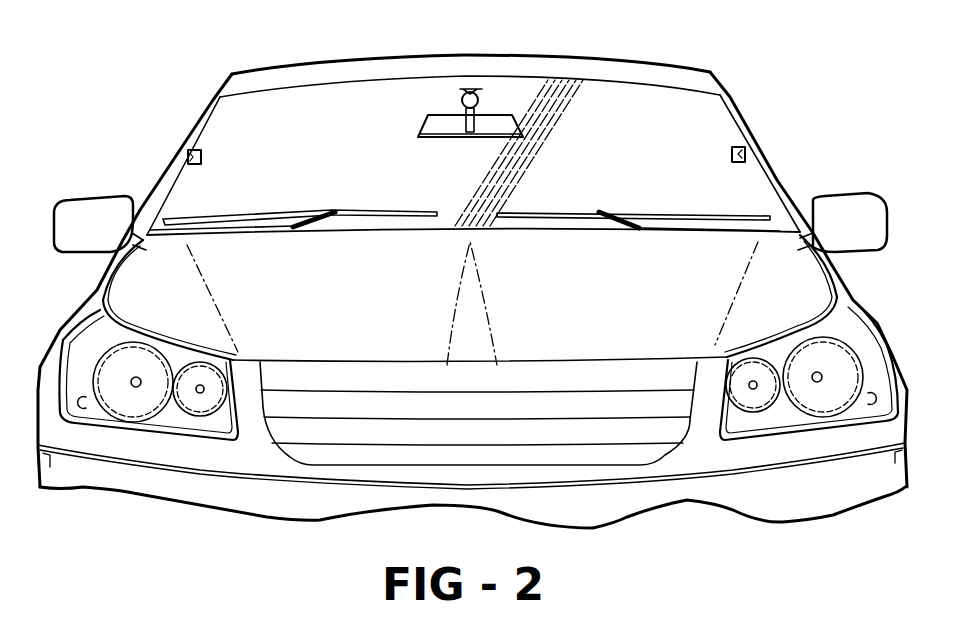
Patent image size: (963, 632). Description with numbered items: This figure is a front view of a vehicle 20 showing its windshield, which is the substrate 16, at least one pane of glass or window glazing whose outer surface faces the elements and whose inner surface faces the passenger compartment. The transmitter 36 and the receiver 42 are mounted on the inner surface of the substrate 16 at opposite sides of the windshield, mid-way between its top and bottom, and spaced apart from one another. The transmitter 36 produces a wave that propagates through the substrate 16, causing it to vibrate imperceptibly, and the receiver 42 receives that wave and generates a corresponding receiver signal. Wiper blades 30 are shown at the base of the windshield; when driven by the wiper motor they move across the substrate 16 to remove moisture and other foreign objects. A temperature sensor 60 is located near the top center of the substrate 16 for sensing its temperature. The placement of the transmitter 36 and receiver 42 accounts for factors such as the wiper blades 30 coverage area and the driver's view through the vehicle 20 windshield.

The substrate 16 is at (717, 117).
The vehicle 20 is at (388, 55).
The wiper blade 30 is at (350, 210).
The transmitter 36 is at (746, 153).
The receiver 42 is at (188, 156).
The temperature sensor 60 is at (480, 101).